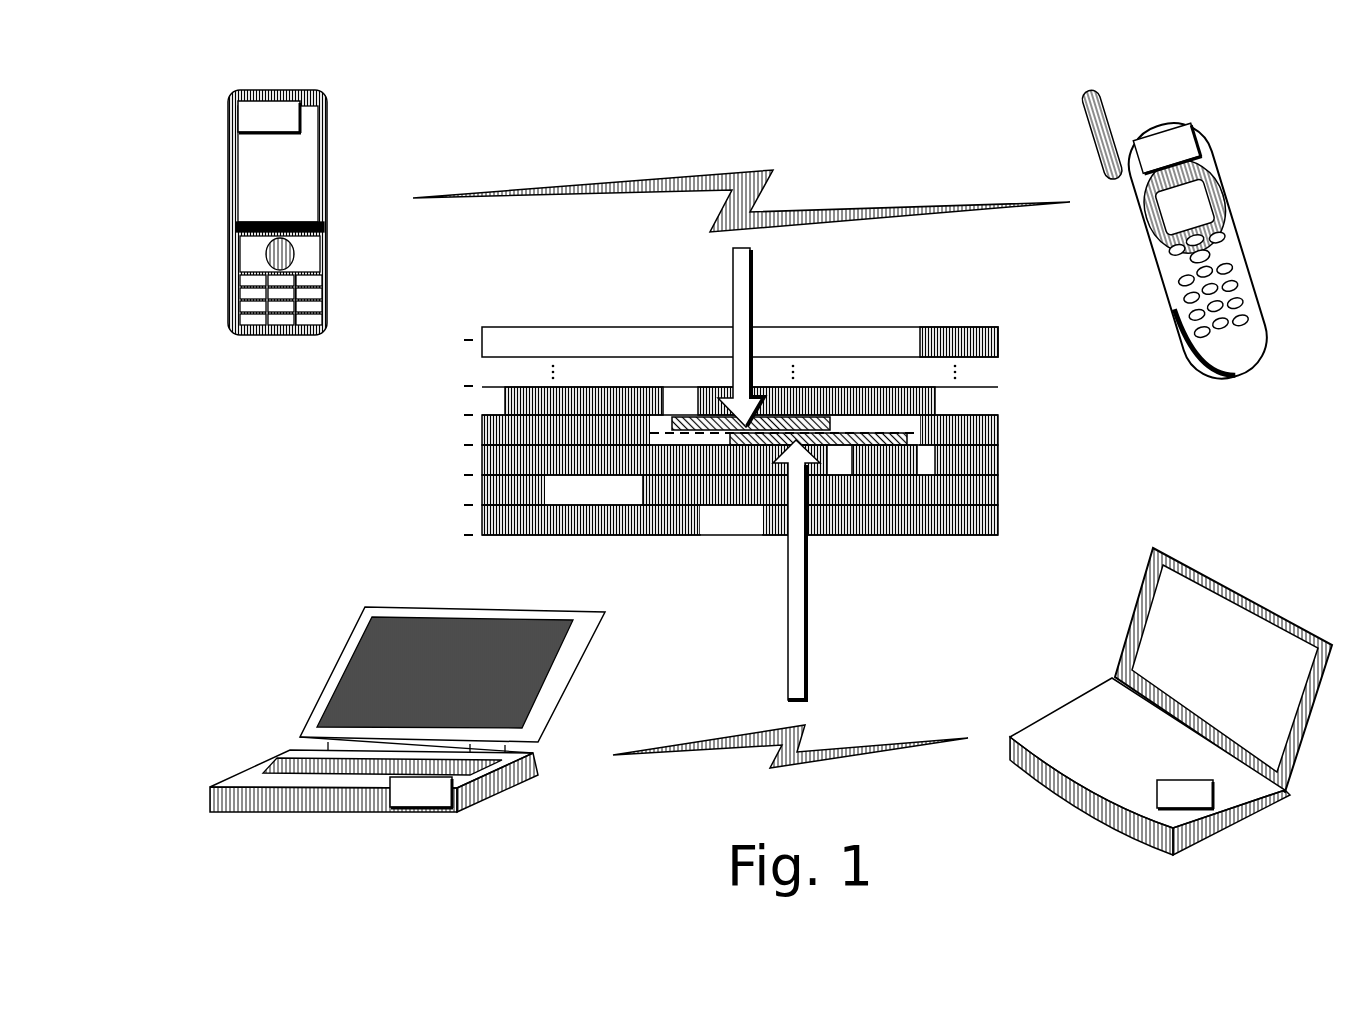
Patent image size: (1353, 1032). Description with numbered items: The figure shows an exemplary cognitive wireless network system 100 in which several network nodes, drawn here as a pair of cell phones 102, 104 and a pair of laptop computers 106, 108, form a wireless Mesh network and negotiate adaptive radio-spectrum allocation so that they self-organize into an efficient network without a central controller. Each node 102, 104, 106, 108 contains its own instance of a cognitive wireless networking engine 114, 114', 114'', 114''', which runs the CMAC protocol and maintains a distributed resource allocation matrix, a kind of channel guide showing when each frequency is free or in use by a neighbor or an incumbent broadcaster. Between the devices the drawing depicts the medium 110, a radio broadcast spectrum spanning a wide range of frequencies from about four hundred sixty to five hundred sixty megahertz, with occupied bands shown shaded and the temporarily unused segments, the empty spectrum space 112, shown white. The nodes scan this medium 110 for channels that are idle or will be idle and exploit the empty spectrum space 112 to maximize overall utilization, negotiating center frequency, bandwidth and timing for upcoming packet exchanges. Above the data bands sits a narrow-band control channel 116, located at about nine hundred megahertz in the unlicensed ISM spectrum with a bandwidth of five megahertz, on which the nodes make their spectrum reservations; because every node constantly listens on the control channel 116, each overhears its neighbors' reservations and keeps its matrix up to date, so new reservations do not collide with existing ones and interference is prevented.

The cognitive wireless network system 100 is at (826, 70).
The network node 102 is at (325, 113).
The network node 104 is at (1193, 125).
The network node 106 is at (590, 640).
The network node 108 is at (1123, 645).
The medium 110 is at (325, 443).
The empty spectrum space 112 is at (692, 446).
The cognitive wireless networking engine 114 is at (269, 117).
The cognitive wireless networking engine 114' is at (1167, 148).
The cognitive wireless networking engine 114'' is at (421, 792).
The cognitive wireless networking engine 114''' is at (1185, 794).
The control channel 116 is at (740, 342).